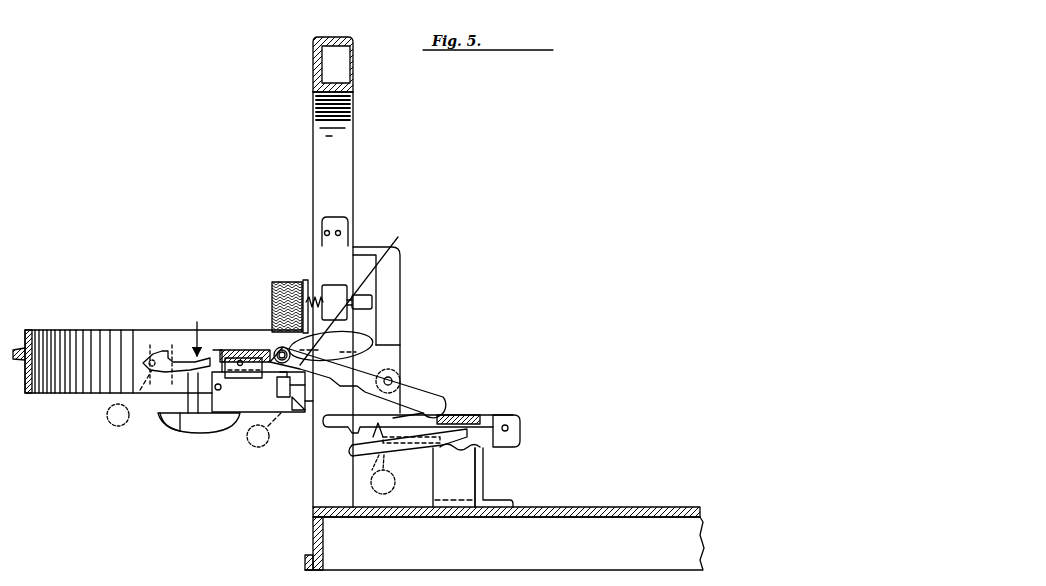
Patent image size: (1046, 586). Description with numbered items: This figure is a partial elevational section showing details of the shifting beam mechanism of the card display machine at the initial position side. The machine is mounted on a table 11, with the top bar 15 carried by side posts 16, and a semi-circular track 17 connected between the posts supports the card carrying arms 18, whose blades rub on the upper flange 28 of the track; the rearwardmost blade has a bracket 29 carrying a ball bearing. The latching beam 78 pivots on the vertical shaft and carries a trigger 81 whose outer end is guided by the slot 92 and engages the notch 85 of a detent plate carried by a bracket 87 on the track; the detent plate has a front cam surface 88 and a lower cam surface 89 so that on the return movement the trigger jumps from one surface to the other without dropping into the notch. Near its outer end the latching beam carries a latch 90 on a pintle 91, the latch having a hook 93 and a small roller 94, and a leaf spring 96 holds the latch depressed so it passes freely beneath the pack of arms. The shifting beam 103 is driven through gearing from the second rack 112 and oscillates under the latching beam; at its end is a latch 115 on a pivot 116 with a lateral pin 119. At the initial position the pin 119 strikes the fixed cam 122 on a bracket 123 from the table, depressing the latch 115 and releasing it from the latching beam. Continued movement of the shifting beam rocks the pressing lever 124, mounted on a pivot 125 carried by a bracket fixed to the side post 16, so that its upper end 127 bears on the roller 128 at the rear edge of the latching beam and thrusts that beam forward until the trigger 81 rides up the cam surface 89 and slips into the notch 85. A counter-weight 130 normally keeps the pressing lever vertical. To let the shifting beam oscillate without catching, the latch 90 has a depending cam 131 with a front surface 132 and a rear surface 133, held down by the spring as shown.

The table 11 is at (643, 506).
The top bar 15 is at (348, 80).
The side post 16 is at (343, 174).
The semi-circular track 17 is at (60, 348).
The card carrying arm 18 is at (270, 288).
The upper flange 28 is at (27, 330).
The bracket 29 is at (307, 284).
The latching beam 78 is at (262, 348).
The trigger 81 is at (292, 386).
The notch 85 is at (304, 410).
The bracket 87 is at (358, 382).
The cam surface 88 is at (264, 429).
The lower cam surface 89 is at (310, 402).
The latch 90 is at (191, 334).
The pintle 91 is at (250, 352).
The slot 92 is at (331, 346).
The hook 93 is at (165, 352).
The small roller 94 is at (140, 397).
The leaf spring 96 is at (278, 372).
The shifting beam 103 is at (470, 414).
The second rack 112 is at (456, 450).
The latch 115 is at (357, 447).
The pivot 116 is at (508, 431).
The lateral pin 119 is at (383, 474).
The fixed cam 122 is at (394, 417).
The bracket 123 is at (466, 486).
The pressing lever 124 is at (382, 350).
The pivot 125 is at (396, 378).
The upper end 127 is at (363, 295).
The roller 128 is at (277, 350).
The counter-weight 130 is at (437, 415).
The depending cam 131 is at (168, 427).
The front surface 132 is at (182, 418).
The rear surface 133 is at (226, 433).